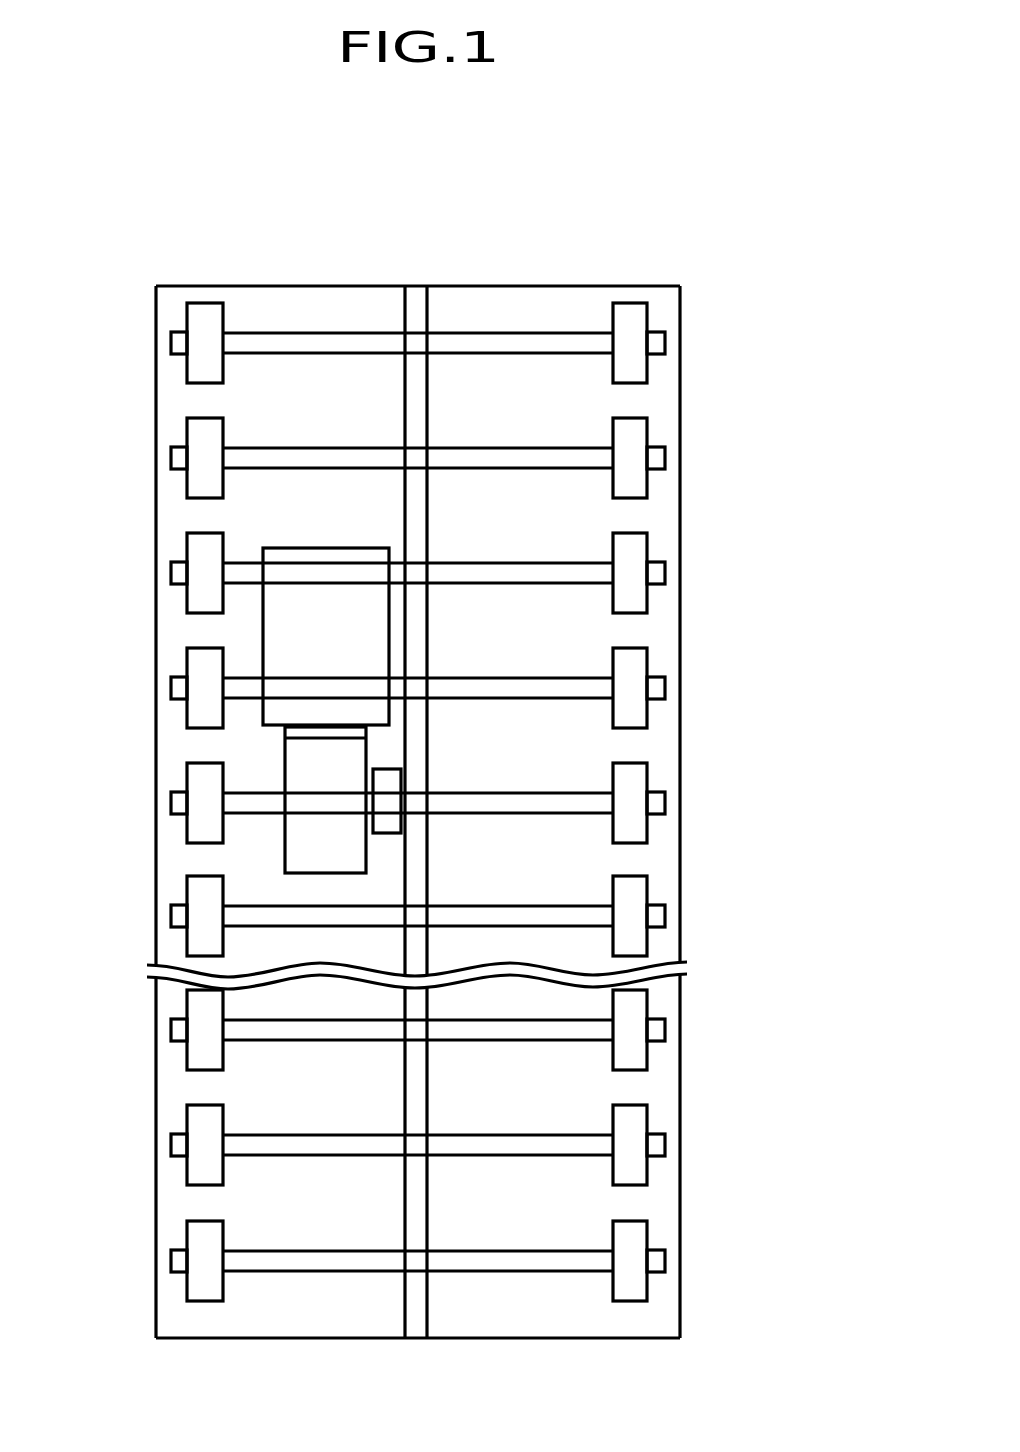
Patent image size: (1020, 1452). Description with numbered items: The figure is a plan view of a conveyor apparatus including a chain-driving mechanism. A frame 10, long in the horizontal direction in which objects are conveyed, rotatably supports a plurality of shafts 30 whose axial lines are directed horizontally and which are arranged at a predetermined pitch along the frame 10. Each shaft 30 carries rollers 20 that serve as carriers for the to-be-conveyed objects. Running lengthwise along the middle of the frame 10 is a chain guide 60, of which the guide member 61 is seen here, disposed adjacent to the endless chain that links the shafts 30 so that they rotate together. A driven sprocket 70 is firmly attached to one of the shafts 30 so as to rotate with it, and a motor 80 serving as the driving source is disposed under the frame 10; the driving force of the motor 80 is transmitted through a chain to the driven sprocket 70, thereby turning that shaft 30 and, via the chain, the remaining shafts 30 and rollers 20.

The frame 10 is at (700, 628).
The roller 20 is at (647, 310).
The shaft 30 is at (502, 331).
The chain guide 60 is at (430, 390).
The chain guide member 61 is at (479, 758).
The driven sprocket 70 is at (377, 823).
The motor 80 is at (285, 752).